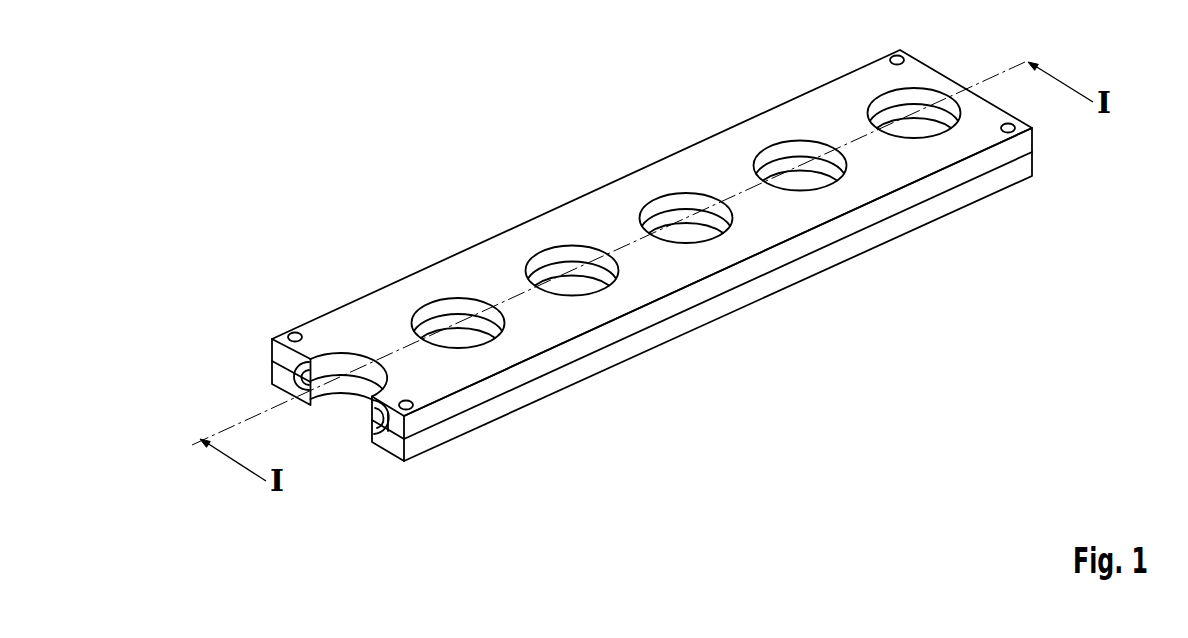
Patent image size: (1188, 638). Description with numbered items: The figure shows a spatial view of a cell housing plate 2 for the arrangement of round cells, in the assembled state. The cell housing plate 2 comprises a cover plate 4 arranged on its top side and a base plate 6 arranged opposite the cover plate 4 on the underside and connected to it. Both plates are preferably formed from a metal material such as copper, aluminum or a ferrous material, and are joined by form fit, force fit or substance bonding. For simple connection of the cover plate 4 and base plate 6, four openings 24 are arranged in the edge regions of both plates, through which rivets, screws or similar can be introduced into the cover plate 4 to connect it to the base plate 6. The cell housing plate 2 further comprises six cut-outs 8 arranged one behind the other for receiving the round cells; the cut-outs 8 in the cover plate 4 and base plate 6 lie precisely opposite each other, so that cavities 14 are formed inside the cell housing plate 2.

The cell housing plate 2 is at (652, 234).
The cover plate 4 is at (680, 163).
The base plate 6 is at (700, 326).
The cut-outs 8 is at (550, 258).
The cavities 14 is at (367, 432).
The openings 24 is at (900, 54).